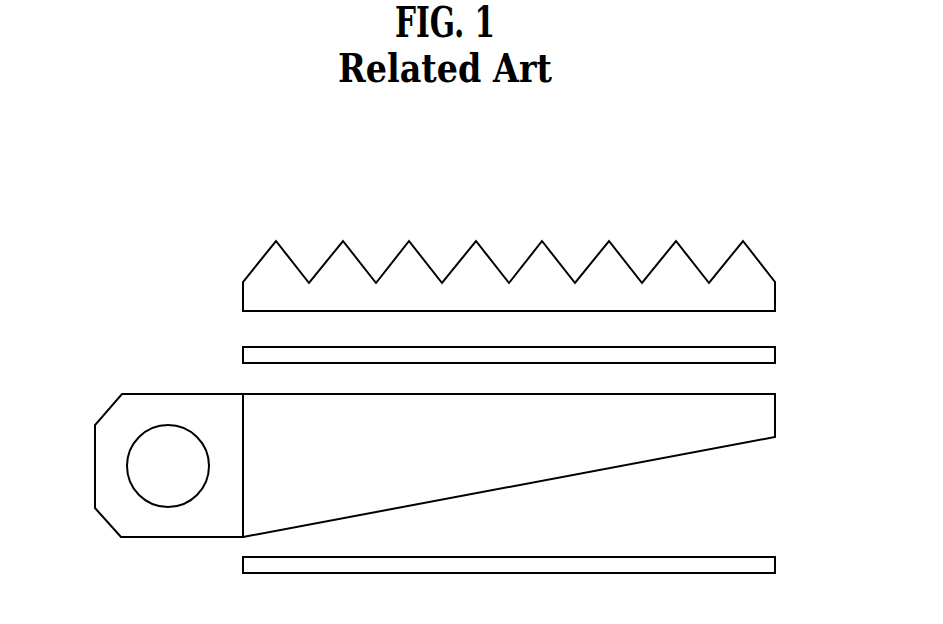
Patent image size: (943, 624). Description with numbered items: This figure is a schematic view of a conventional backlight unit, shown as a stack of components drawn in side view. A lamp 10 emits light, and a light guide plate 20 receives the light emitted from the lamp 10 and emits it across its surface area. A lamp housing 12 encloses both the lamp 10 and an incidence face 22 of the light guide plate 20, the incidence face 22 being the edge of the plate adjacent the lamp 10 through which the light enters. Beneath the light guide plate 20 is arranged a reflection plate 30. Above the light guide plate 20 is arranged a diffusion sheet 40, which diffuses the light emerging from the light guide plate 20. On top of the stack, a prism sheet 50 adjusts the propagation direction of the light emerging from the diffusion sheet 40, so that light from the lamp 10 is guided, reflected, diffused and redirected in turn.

The lamp 10 is at (166, 435).
The lamp housing 12 is at (95, 466).
The light guide plate 20 is at (766, 410).
The incidence face 22 is at (242, 467).
The reflection plate 30 is at (766, 569).
The diffusion sheet 40 is at (766, 357).
The prism sheet 50 is at (766, 297).